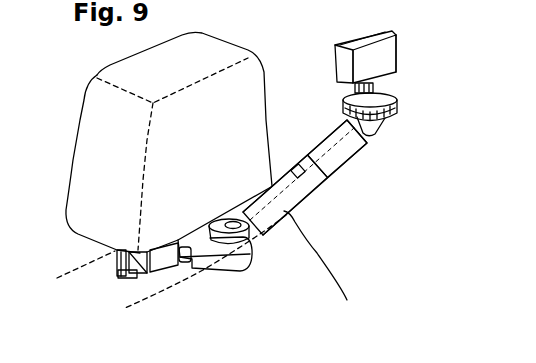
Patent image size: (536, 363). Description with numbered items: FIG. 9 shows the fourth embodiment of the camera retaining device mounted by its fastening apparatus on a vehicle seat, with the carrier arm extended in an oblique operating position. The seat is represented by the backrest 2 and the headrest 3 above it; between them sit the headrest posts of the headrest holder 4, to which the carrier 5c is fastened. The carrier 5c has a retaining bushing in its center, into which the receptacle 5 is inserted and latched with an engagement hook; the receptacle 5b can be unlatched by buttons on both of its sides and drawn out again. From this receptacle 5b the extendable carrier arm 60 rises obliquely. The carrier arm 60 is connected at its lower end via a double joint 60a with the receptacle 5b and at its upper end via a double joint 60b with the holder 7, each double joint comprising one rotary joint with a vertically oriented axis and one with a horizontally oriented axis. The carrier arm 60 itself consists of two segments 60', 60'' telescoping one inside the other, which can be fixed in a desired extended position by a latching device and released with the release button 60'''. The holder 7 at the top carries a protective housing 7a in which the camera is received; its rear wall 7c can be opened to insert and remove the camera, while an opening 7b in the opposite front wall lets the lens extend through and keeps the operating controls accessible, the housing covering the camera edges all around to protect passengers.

The backrest 2 is at (87, 280).
The headrest 3 is at (90, 152).
The headrest holder 4 is at (122, 270).
The receptacle 5 is at (155, 293).
The receptacle 5b is at (200, 262).
The carrier 5c is at (167, 253).
The holder 7 is at (412, 98).
The protective housing 7a is at (363, 37).
The opening 7b is at (424, 36).
The rear wall 7c is at (372, 60).
The carrier arm 60 is at (321, 194).
The double joint 60a is at (232, 226).
The double joint 60b is at (410, 127).
The segment 60' is at (277, 193).
The segment 60'' is at (332, 131).
The release button 60''' is at (293, 151).